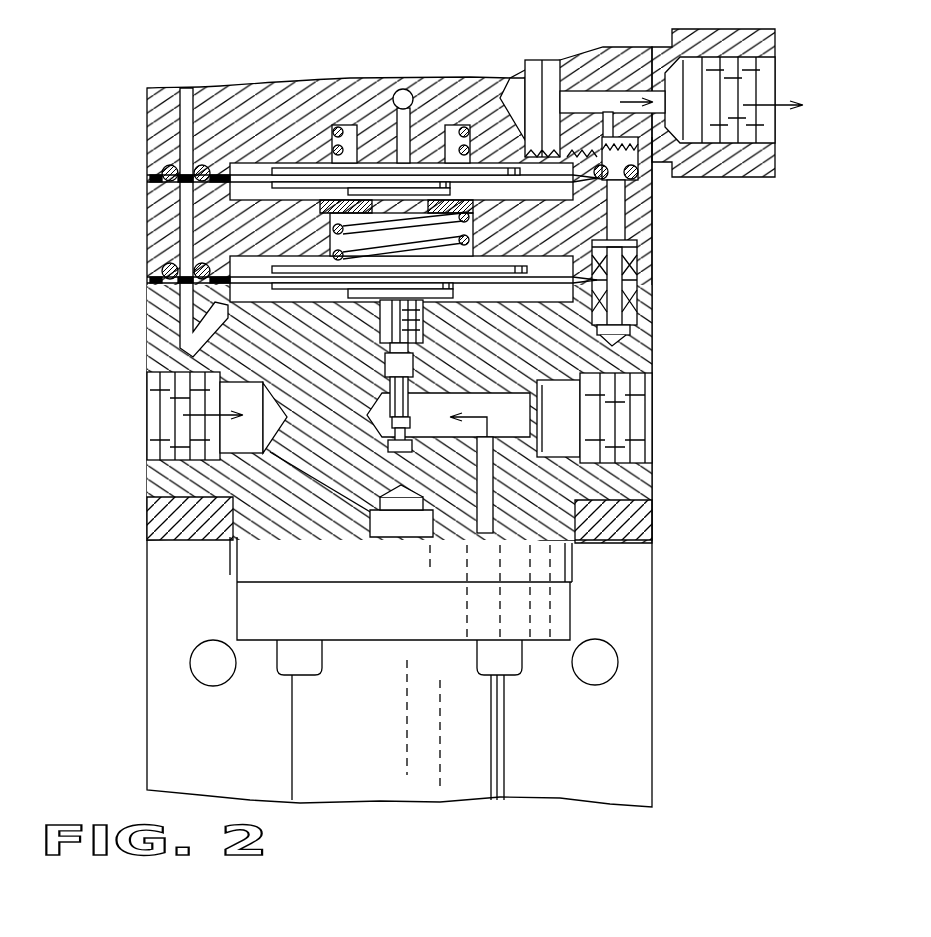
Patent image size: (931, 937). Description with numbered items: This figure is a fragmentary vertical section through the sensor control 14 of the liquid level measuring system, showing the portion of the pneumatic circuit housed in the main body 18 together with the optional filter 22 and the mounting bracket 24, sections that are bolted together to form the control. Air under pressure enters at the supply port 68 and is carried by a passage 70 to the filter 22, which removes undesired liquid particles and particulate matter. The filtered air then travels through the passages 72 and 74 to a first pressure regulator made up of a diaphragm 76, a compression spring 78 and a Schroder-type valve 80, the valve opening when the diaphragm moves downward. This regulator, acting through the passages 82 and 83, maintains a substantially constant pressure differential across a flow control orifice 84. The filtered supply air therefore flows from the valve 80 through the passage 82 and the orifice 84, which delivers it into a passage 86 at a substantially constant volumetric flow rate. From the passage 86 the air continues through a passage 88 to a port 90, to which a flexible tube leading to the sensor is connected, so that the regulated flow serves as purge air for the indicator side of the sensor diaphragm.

The sensor control 14 is at (697, 366).
The main body 18 is at (645, 237).
The filter 22 is at (450, 788).
The mounting bracket 24 is at (630, 749).
The supply port 68 is at (167, 460).
The passage 70 is at (330, 500).
The passage 72 is at (494, 482).
The passage 74 is at (480, 397).
The diaphragm 76 is at (338, 278).
The compression spring 78 is at (460, 246).
The Schroder-type valve 80 is at (415, 363).
The passage 82 is at (582, 312).
The passage 83 is at (608, 212).
The flow control orifice 84 is at (615, 300).
The passage 86 is at (628, 188).
The passage 88 is at (575, 90).
The port 90 is at (755, 140).